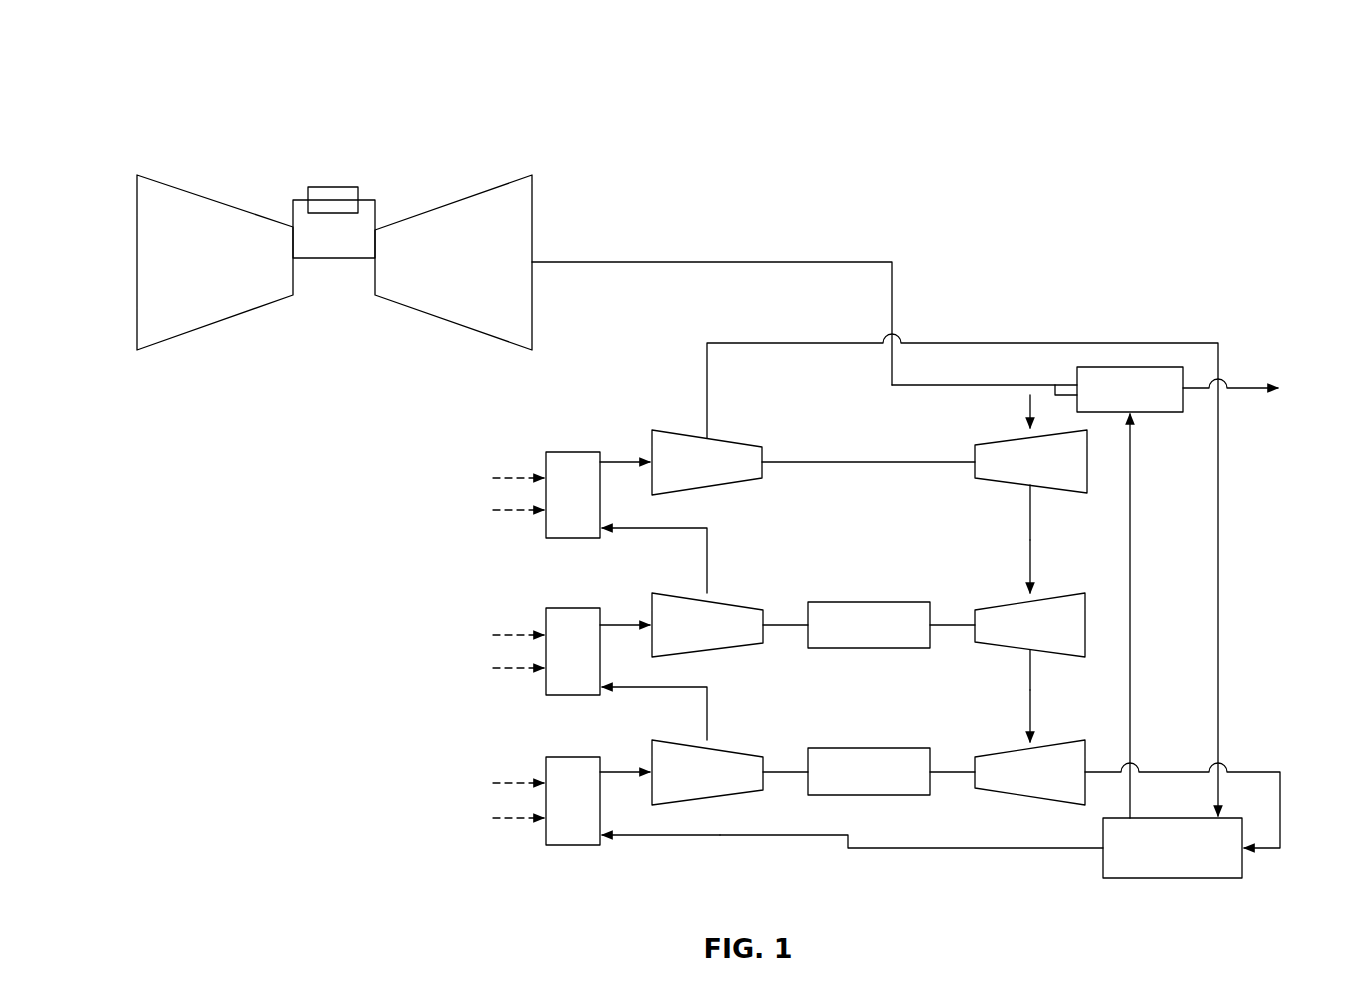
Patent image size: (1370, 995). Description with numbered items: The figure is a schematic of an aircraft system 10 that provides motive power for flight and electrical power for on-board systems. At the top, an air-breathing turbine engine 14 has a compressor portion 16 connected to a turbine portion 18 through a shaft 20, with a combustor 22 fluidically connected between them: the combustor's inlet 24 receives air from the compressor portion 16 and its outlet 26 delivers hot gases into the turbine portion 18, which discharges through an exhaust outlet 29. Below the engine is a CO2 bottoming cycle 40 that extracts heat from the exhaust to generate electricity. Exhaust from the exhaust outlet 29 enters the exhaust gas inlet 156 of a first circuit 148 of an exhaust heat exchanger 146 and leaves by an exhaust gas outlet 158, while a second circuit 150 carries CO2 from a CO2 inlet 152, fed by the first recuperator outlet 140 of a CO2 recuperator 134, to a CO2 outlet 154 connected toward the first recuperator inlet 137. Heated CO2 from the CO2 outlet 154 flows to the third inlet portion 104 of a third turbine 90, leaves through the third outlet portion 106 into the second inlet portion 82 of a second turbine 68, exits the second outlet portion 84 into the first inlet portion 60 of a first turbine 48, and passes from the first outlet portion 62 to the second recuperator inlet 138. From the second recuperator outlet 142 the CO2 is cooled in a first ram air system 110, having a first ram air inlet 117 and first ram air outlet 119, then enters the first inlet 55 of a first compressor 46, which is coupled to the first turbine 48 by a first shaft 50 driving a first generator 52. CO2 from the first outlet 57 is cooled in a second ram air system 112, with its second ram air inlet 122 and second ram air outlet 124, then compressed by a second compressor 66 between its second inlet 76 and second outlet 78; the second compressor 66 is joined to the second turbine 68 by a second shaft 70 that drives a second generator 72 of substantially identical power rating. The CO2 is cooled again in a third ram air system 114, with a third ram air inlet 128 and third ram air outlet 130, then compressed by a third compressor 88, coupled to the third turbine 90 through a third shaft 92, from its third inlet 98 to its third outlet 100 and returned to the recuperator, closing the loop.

The aircraft system 10 is at (172, 122).
The air-breathing turbine engine 14 is at (135, 173).
The compressor portion 16 is at (222, 295).
The turbine portion 18 is at (448, 295).
The shaft 20 is at (335, 260).
The combustor 22 is at (338, 187).
The inlet 24 is at (298, 198).
The outlet 26 is at (368, 198).
The exhaust outlet 29 is at (712, 263).
The CO2 bottoming cycle 40 is at (460, 470).
The first compressor 46 is at (683, 787).
The first turbine 48 is at (1016, 785).
The first shaft 50 is at (785, 772).
The first generator 52 is at (851, 787).
The first inlet 55 is at (618, 775).
The first outlet 57 is at (707, 718).
The first inlet portion 60 is at (1030, 712).
The first outlet portion 62 is at (1168, 772).
The second compressor 66 is at (683, 640).
The second turbine 68 is at (1016, 637).
The second shaft 70 is at (785, 625).
The second generator 72 is at (851, 640).
The second inlet 76 is at (618, 628).
The second outlet 78 is at (667, 530).
The second inlet portion 82 is at (1030, 547).
The second outlet portion 84 is at (1030, 668).
The third compressor 88 is at (683, 475).
The third turbine 90 is at (1016, 477).
The third shaft 92 is at (868, 462).
The third inlet 98 is at (617, 463).
The third outlet 100 is at (707, 387).
The third inlet portion 104 is at (1030, 405).
The third outlet portion 106 is at (1030, 502).
The first ram air system 110 is at (548, 815).
The second ram air system 112 is at (548, 665).
The third ram air system 114 is at (548, 502).
The first ram air inlet 117 is at (680, 835).
The first ram air outlet 119 is at (617, 770).
The second ram air inlet 122 is at (653, 690).
The second ram air outlet 124 is at (617, 623).
The third ram air inlet 128 is at (633, 533).
The third ram air outlet 130 is at (613, 460).
The CO2 recuperator 134 is at (1147, 863).
The first recuperator inlet 137 is at (1218, 688).
The second recuperator inlet 138 is at (1280, 810).
The first recuperator outlet 140 is at (1130, 535).
The second recuperator outlet 142 is at (1058, 848).
The exhaust heat exchanger 146 is at (1105, 405).
The first circuit 148 is at (1055, 374).
The second circuit 150 is at (1153, 452).
The CO2 inlet 152 is at (1130, 470).
The CO2 outlet 154 is at (1055, 393).
The exhaust gas inlet 156 is at (1065, 383).
The exhaust gas outlet 158 is at (1247, 380).